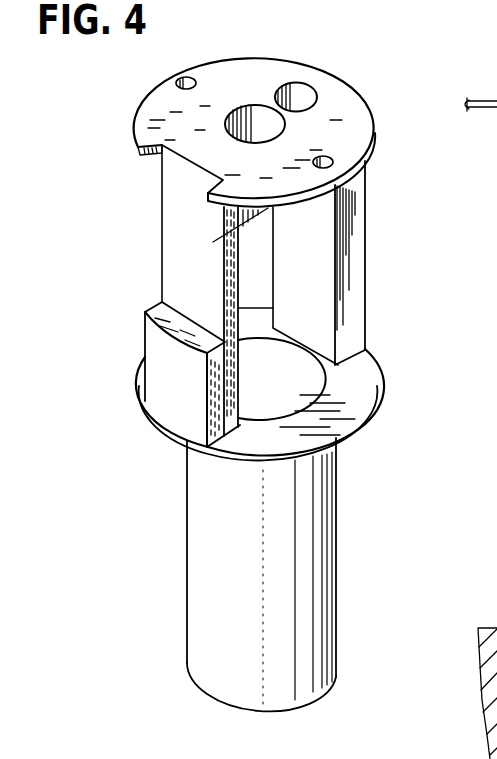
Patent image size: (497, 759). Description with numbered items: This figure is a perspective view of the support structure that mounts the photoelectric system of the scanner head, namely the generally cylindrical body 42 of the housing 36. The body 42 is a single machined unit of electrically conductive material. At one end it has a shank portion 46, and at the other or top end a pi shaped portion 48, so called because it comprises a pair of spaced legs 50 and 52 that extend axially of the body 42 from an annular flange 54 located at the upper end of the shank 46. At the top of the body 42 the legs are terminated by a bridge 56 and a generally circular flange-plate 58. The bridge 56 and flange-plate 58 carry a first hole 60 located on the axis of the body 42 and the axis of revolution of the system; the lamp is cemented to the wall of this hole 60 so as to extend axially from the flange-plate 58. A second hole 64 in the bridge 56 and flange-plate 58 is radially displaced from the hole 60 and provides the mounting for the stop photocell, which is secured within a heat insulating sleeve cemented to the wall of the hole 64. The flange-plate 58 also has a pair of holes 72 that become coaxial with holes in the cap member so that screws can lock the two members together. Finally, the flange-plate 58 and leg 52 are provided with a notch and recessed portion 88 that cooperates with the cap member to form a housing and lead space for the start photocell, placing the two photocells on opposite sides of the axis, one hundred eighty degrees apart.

The cylindrical body 42 is at (118, 421).
The shank portion 46 is at (336, 508).
The pi shaped portion 48 is at (370, 243).
The leg 50 is at (358, 288).
The leg 52 is at (208, 426).
The annular flange 54 is at (376, 378).
The bridge 56 is at (213, 242).
The flange-plate 58 is at (375, 129).
The first hole 60 is at (247, 103).
The second hole 64 is at (310, 93).
The holes 72 is at (177, 80).
The notch and recessed portion 88 is at (162, 211).
The housing 36 is at (487, 642).